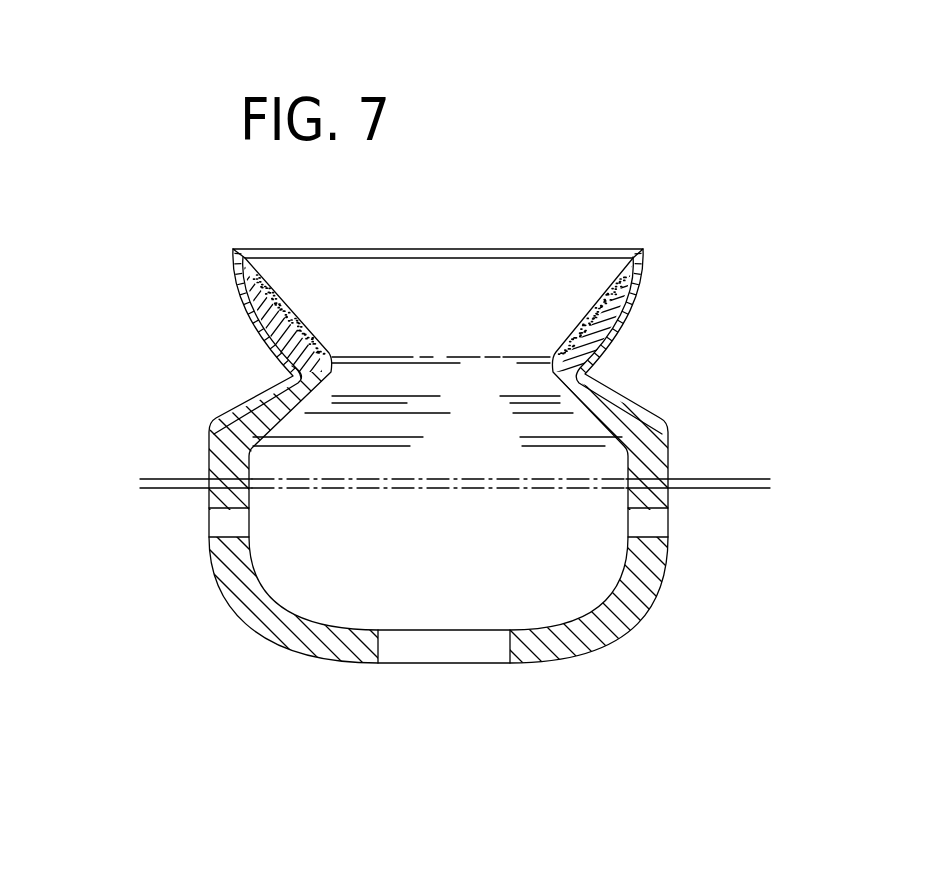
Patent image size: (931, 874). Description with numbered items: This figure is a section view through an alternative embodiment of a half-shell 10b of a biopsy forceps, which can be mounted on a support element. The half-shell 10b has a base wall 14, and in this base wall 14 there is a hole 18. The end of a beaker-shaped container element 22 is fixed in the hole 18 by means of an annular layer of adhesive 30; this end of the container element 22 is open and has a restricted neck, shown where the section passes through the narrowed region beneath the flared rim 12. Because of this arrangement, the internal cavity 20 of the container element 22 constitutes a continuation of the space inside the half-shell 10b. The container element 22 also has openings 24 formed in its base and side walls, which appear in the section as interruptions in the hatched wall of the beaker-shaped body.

The half-shell 10b is at (238, 328).
The rim 12 is at (616, 250).
The base wall 14 is at (616, 356).
The hole 18 is at (288, 372).
The internal cavity 20 is at (556, 580).
The beaker-shaped container element 22 is at (642, 637).
The openings 24 is at (226, 533).
The annular layer of adhesive 30 is at (247, 288).